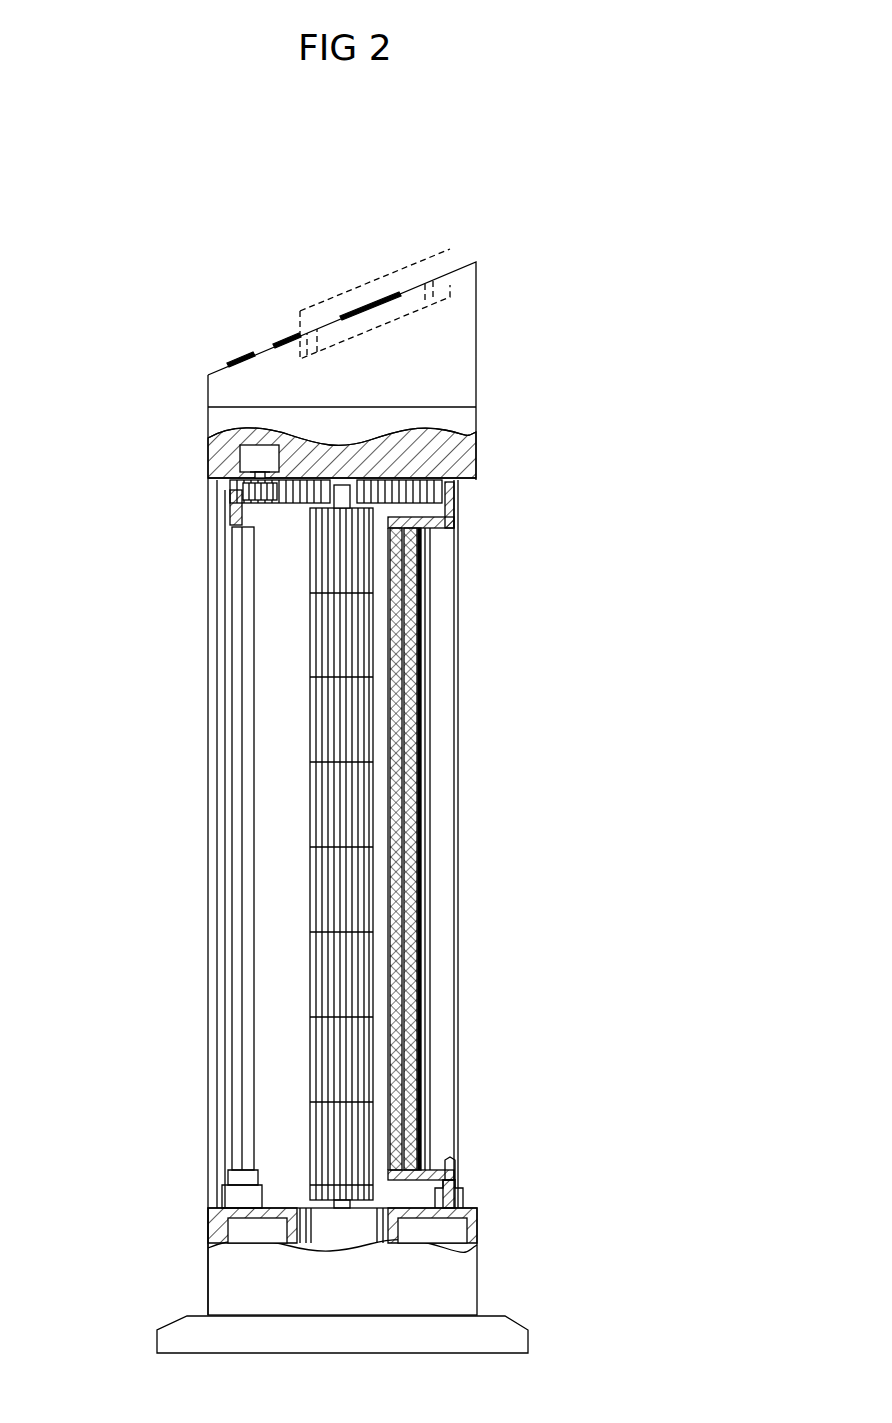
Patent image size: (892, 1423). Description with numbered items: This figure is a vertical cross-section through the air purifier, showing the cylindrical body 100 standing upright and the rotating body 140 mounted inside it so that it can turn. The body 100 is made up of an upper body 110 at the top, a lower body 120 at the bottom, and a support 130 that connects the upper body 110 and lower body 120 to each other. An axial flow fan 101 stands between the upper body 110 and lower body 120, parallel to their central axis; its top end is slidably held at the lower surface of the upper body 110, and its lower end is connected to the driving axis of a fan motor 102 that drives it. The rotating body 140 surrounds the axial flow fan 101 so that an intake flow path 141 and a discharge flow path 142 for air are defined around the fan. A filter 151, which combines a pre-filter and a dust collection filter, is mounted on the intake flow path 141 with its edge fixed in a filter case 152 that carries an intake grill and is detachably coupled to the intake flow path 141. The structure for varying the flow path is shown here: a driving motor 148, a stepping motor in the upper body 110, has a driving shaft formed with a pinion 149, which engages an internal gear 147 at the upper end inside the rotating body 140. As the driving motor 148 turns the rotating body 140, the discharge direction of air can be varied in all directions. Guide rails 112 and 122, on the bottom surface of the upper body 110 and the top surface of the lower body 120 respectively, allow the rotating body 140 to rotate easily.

The body 100 is at (188, 308).
The upper body 110 is at (468, 348).
The guide rail 112 is at (460, 500).
The lower body 120 is at (468, 1280).
The guide rail 122 is at (462, 1200).
The support 130 is at (212, 836).
The rotating body 140 is at (460, 800).
The intake flow path 141 is at (436, 978).
The discharge flow path 142 is at (270, 630).
The internal gear 147 is at (296, 503).
The driving motor 148 is at (258, 460).
The pinion 149 is at (252, 489).
The filter 151 is at (412, 1072).
The filter case 152 is at (456, 1153).
The axial flow fan 101 is at (320, 962).
The fan motor 102 is at (337, 1243).